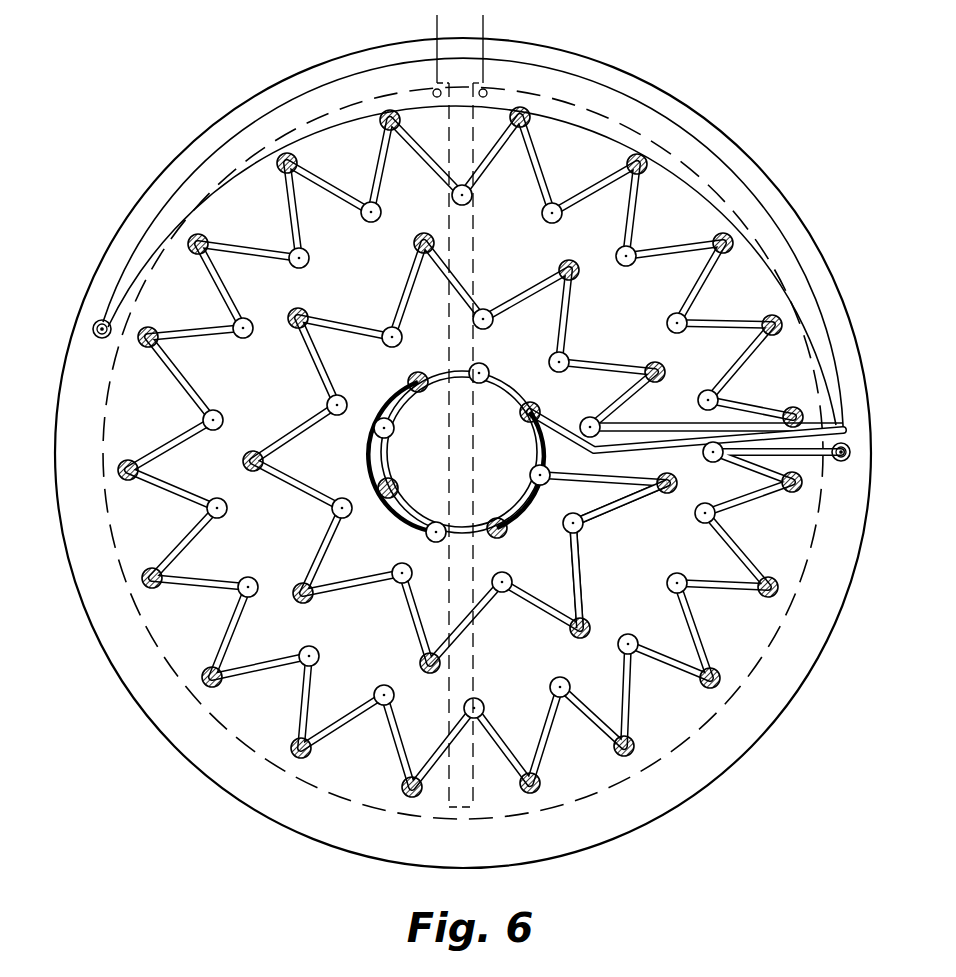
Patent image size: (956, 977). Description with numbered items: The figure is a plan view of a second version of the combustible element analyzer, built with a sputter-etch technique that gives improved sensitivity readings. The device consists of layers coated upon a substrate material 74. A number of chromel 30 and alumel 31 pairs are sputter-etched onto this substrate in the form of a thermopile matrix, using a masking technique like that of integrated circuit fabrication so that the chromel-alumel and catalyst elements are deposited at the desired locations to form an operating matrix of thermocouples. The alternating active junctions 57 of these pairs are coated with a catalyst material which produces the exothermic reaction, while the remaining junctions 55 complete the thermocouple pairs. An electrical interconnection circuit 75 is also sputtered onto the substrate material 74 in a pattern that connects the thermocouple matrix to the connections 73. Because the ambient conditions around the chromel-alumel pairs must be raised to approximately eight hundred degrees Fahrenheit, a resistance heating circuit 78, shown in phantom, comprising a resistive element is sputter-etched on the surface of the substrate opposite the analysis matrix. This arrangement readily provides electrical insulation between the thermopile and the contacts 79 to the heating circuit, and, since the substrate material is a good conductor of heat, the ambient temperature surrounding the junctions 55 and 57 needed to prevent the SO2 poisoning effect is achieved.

The chromel 30 is at (620, 512).
The alumel 31 is at (583, 560).
The junctions 55 is at (452, 192).
The active junctions 57 is at (380, 121).
The connections 73 is at (93, 334).
The substrate material 74 is at (710, 773).
The electrical interconnection circuit 75 is at (556, 70).
The resistance heating circuit 78 is at (305, 117).
The contacts 79 is at (437, 30).